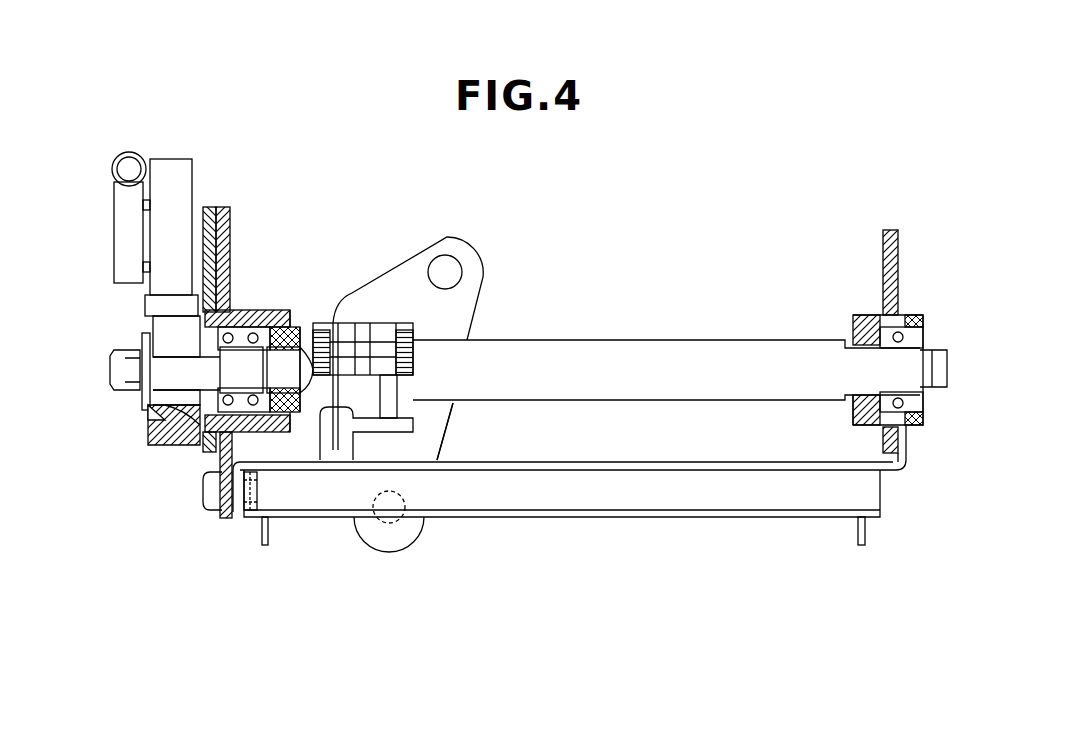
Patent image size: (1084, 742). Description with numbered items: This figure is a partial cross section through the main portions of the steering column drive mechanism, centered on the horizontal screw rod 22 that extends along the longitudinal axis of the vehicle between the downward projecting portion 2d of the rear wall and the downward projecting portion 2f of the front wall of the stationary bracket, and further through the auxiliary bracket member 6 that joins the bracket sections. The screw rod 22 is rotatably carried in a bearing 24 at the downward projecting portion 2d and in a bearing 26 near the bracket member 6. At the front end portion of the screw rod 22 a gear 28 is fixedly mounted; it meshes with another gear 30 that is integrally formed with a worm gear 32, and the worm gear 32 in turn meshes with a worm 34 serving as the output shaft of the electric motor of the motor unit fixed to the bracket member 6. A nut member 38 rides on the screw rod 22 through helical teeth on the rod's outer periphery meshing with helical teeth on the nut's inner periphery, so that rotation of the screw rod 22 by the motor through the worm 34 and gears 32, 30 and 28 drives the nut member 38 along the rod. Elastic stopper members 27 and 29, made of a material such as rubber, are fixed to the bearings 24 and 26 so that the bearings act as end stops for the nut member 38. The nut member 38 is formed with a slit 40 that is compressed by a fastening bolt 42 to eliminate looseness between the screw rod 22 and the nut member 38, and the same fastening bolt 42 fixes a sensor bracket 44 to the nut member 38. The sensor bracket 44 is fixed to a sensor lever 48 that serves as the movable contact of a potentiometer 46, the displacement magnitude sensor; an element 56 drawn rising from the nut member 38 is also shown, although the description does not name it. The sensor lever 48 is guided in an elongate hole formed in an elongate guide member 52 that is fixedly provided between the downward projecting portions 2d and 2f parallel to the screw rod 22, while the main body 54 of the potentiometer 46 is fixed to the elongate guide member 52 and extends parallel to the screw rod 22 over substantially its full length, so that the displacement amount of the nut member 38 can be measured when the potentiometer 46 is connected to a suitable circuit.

The worm 34 is at (129, 157).
The worm gear 32 is at (120, 218).
The gear 30 is at (178, 155).
The gear 28 is at (153, 433).
The auxiliary bracket member 6 is at (210, 206).
The downward projecting portion 2f is at (222, 210).
The bearing 26 is at (268, 310).
The elastic stopper member 29 is at (285, 433).
The nut member 38 is at (352, 322).
The fastening bolt 42 is at (430, 330).
The sensor lever 48 is at (325, 443).
The sensor bracket 44 is at (413, 420).
The lever 56 is at (400, 270).
The slit 40 is at (400, 395).
The screw rod 22 is at (632, 340).
The bearing 24 is at (860, 318).
The downward projecting portion 2d is at (898, 256).
The elongate guide member 52 is at (598, 463).
The main body 54 is at (556, 515).
The potentiometer 46 is at (344, 535).
The elastic stopper member 27 is at (858, 422).